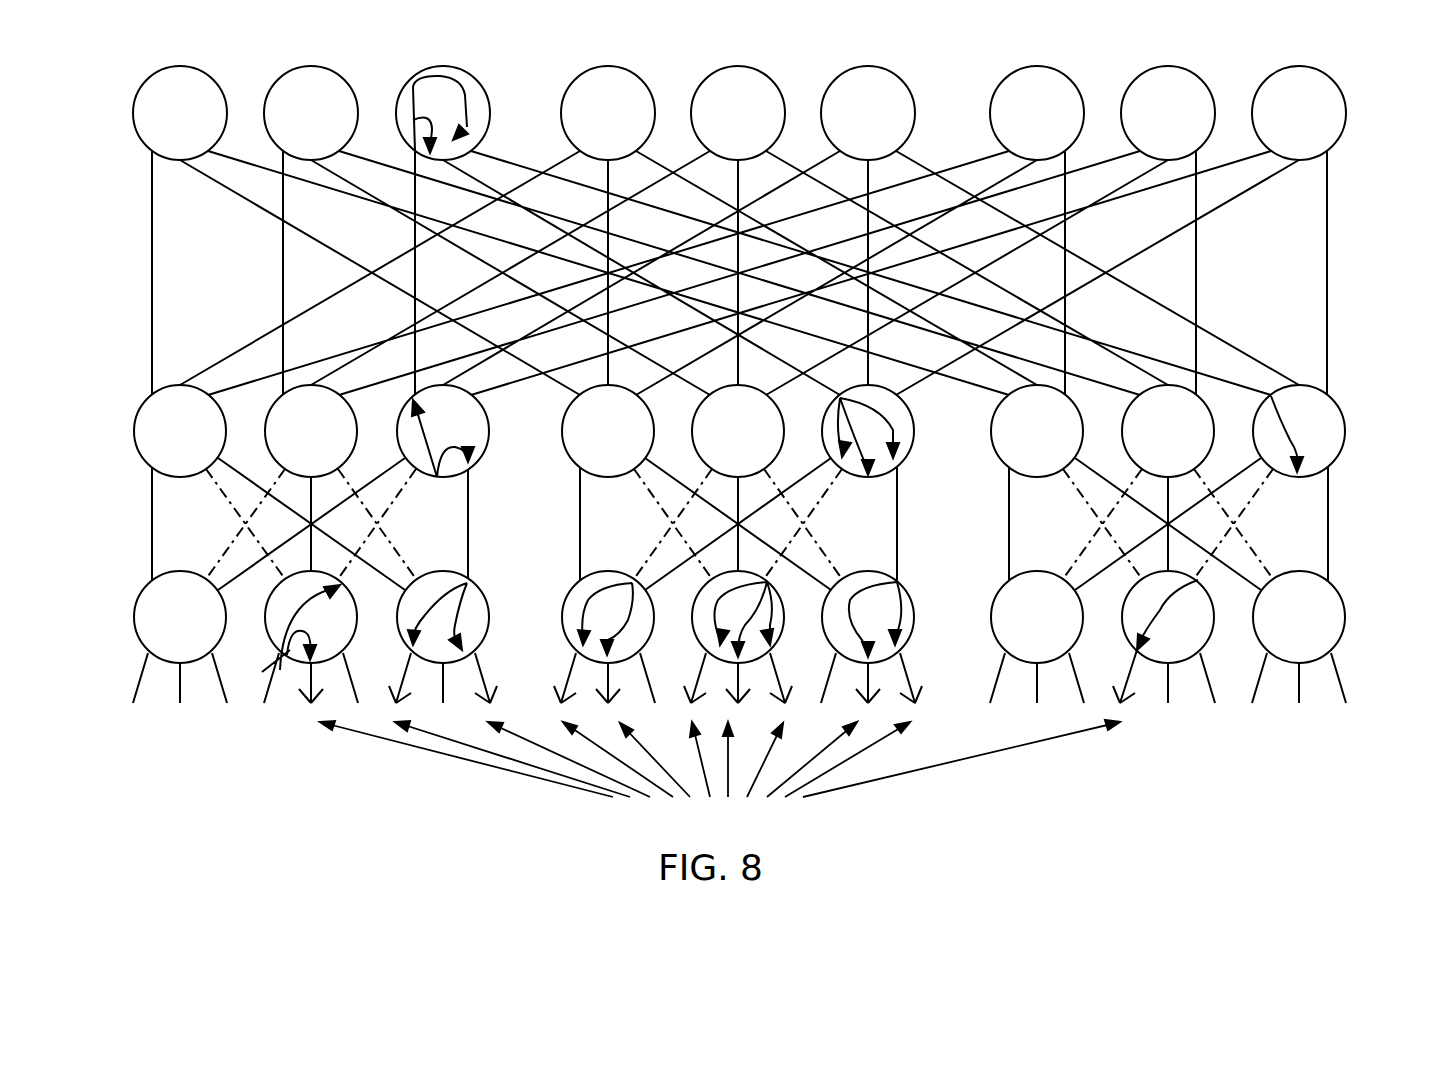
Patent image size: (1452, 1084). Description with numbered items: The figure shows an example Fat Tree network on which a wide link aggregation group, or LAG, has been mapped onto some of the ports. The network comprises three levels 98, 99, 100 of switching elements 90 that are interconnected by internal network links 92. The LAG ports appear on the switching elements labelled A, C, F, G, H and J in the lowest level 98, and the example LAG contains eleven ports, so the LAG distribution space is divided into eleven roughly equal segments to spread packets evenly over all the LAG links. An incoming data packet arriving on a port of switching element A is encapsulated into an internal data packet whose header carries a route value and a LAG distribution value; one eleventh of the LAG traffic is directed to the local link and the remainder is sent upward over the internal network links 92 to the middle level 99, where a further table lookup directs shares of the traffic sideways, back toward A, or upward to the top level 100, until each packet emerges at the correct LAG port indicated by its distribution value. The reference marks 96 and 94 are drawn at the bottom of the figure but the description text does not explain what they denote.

The level of switching elements 100 is at (1355, 115).
The internal network links 92 is at (1328, 252).
The switching elements 90 is at (1347, 408).
The level of switching elements 99 is at (1353, 432).
The level of switching elements 98 is at (1353, 613).
The output lines 96 is at (253, 723).
The output signals 94 is at (720, 778).